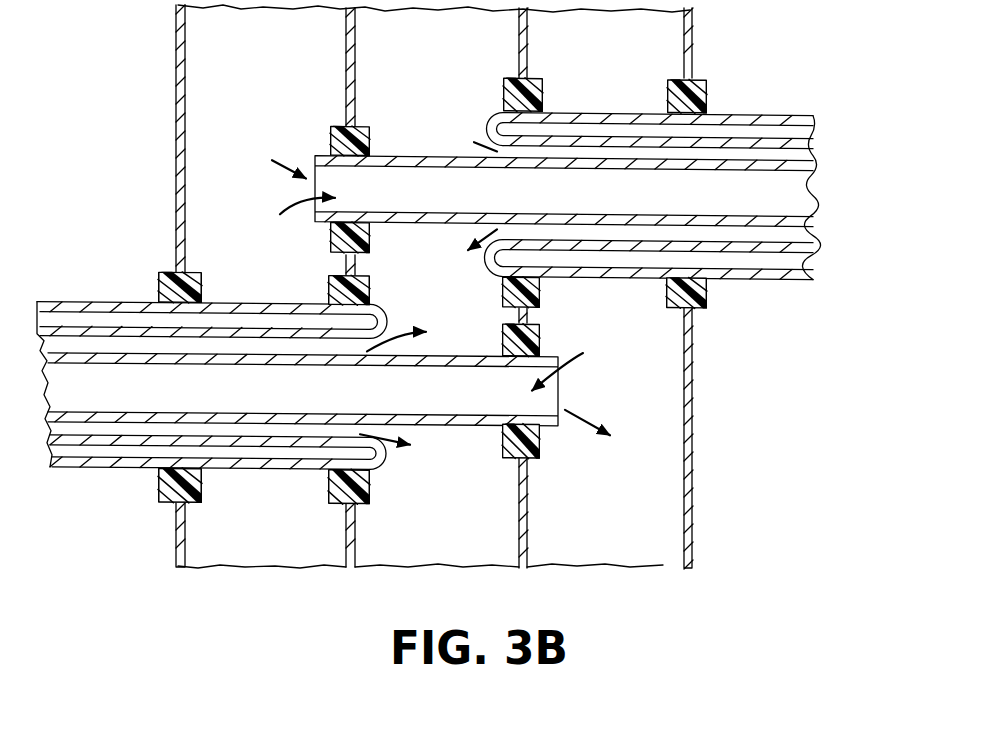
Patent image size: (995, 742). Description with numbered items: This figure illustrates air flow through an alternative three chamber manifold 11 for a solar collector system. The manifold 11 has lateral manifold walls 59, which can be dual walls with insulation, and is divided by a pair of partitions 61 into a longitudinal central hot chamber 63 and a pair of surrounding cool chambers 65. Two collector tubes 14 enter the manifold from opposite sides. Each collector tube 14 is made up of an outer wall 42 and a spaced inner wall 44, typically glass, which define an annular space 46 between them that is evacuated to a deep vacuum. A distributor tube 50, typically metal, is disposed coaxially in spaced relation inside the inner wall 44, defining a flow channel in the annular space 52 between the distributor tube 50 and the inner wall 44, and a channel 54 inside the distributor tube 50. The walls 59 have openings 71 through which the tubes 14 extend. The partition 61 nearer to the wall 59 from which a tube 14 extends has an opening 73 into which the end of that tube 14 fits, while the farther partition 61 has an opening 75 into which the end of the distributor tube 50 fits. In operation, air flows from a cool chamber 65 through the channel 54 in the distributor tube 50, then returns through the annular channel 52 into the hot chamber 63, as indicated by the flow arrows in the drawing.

The manifold 11 is at (150, 134).
The collector tube 14 is at (128, 284).
The outer wall 42 is at (717, 120).
The inner wall 44 is at (748, 140).
The annular space 46 is at (772, 136).
The distributor tube 50 is at (418, 157).
The annular space 52 is at (604, 156).
The channel 54 is at (472, 404).
The lateral manifold walls 59 is at (175, 541).
The partitions 61 is at (345, 550).
The hot chamber 63 is at (464, 544).
The cool chambers 65 is at (284, 540).
The openings 71 is at (694, 292).
The opening 73 is at (528, 287).
The opening 75 is at (334, 236).